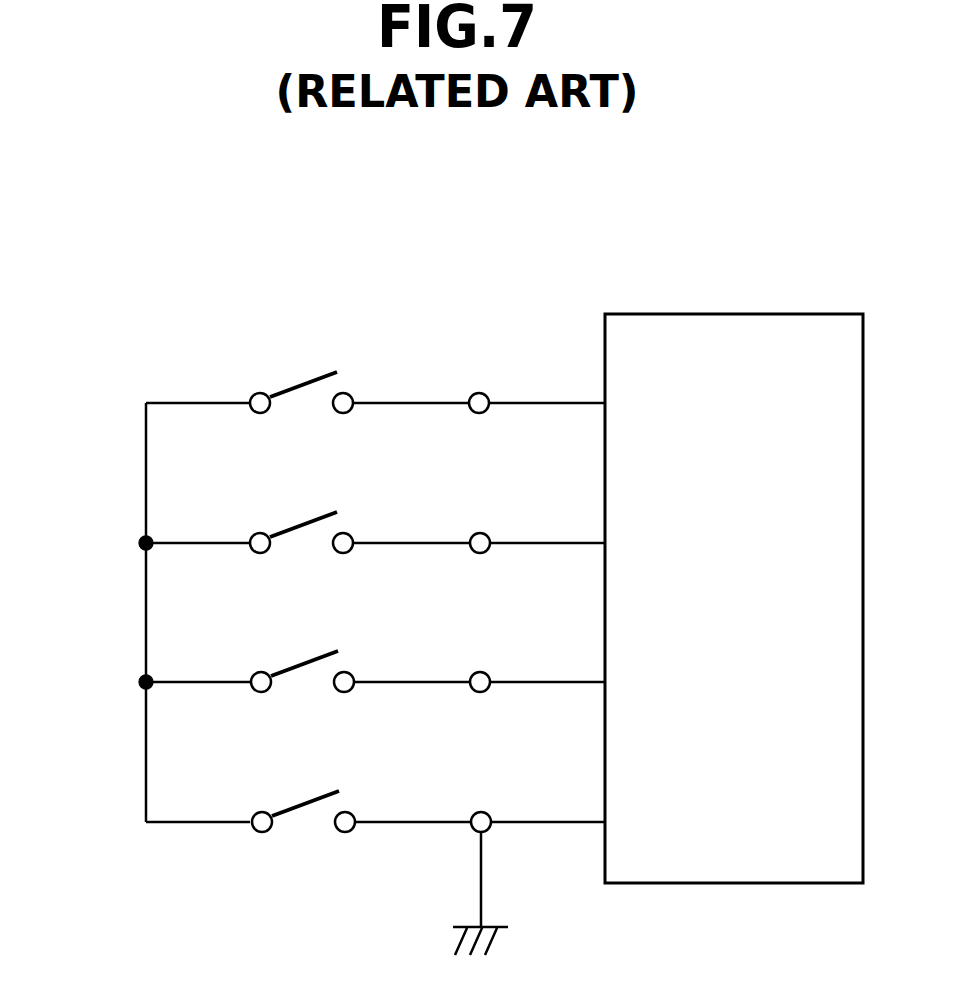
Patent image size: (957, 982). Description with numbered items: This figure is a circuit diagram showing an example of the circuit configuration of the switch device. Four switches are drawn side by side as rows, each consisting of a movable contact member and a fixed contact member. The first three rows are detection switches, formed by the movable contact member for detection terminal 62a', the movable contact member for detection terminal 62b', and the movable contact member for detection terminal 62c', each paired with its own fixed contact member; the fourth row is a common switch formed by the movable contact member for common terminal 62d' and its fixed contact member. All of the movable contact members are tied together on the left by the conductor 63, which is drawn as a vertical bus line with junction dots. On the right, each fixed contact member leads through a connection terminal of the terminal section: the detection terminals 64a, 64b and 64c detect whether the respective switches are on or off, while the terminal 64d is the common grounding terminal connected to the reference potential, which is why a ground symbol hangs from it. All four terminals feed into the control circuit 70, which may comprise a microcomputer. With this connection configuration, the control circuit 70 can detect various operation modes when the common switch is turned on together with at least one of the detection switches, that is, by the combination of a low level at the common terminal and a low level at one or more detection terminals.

The control circuit 70 is at (708, 314).
The conductor 63 is at (146, 597).
The movable contact member for detection terminal 62a' is at (284, 355).
The connection terminal 64a is at (478, 392).
The movable contact member for detection terminal 62b' is at (284, 495).
The connection terminal 64b is at (479, 532).
The movable contact member for detection terminal 62c' is at (285, 634).
The connection terminal 64c is at (479, 671).
The movable contact member for common terminal 62d' is at (285, 774).
The connection terminal 64d is at (480, 811).